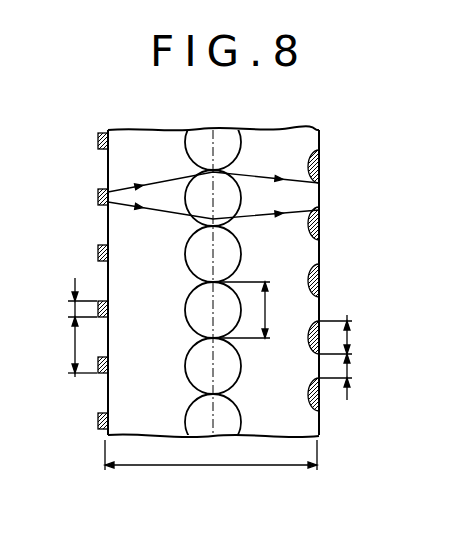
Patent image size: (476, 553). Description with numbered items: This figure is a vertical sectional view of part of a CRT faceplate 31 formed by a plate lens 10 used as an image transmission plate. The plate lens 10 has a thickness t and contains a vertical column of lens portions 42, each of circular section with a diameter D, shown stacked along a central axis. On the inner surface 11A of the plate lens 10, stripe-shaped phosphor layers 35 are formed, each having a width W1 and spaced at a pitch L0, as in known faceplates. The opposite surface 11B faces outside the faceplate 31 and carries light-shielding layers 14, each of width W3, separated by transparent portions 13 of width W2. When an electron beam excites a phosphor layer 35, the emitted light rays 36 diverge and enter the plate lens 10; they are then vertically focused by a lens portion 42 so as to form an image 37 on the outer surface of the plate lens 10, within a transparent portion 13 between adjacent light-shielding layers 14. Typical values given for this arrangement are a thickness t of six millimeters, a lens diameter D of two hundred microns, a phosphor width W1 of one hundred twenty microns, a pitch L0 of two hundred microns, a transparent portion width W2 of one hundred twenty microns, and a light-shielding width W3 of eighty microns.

The plate lens 10 is at (104, 162).
The opposite surface of the plate lens 11A is at (105, 396).
The surface of the plate lens 11B is at (320, 422).
The transparent portion 13 is at (318, 258).
The light-shielding layer 14 is at (313, 232).
The faceplate 31 is at (326, 141).
The phosphor layer 35 is at (100, 252).
The light rays 36 is at (168, 178).
The image 37 is at (320, 197).
The lens portion 42 is at (190, 303).
The width of the phosphor layer W1 is at (72, 312).
The pitch of the phosphor layers L0 is at (70, 345).
The diameter of the lens portion D is at (266, 310).
The width of the light-shielding layer W3 is at (348, 340).
The width of the transparent portion W2 is at (348, 364).
The thickness of the plate lens t is at (217, 466).